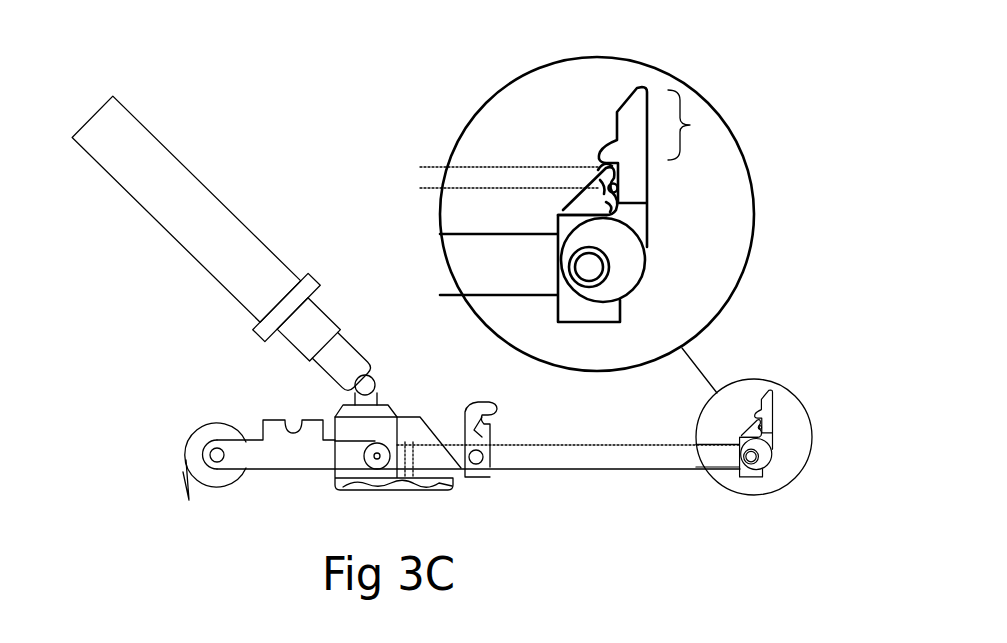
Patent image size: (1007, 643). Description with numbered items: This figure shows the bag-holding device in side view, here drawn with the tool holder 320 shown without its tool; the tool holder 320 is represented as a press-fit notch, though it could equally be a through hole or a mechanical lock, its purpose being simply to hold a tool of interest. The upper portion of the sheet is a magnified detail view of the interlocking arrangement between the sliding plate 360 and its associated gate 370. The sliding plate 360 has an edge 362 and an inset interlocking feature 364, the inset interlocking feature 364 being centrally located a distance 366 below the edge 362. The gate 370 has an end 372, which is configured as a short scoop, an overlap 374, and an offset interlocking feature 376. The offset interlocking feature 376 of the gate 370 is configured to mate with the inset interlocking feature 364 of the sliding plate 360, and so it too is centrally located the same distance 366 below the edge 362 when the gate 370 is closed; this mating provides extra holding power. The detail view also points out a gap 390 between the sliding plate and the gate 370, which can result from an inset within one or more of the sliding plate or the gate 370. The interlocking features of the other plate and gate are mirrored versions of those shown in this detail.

The tool holder 320 is at (297, 423).
The sliding plate 360 is at (594, 300).
The edge 362 is at (600, 165).
The inset interlocking feature 364 is at (608, 190).
The distance 366 is at (420, 188).
The gate 370 is at (633, 176).
The end 372 is at (690, 125).
The overlap 374 is at (603, 163).
The offset interlocking feature 376 is at (620, 188).
The gap 390 is at (612, 207).